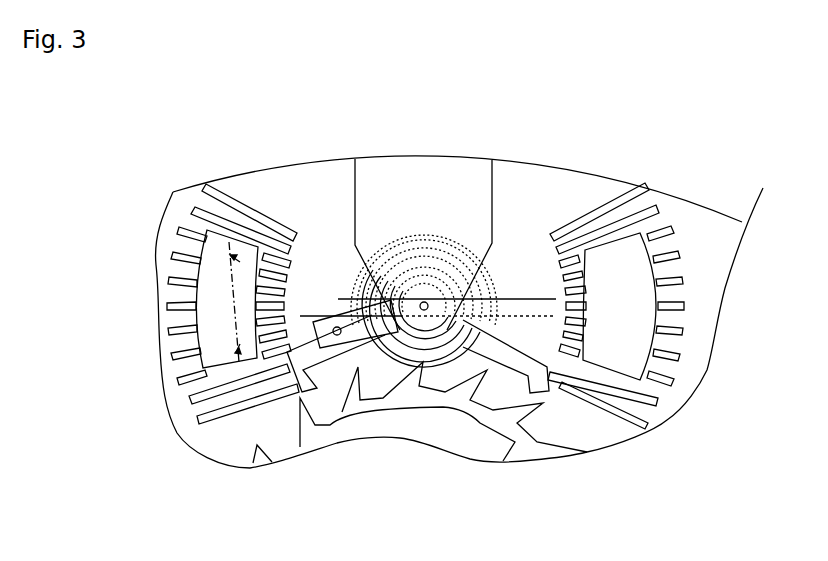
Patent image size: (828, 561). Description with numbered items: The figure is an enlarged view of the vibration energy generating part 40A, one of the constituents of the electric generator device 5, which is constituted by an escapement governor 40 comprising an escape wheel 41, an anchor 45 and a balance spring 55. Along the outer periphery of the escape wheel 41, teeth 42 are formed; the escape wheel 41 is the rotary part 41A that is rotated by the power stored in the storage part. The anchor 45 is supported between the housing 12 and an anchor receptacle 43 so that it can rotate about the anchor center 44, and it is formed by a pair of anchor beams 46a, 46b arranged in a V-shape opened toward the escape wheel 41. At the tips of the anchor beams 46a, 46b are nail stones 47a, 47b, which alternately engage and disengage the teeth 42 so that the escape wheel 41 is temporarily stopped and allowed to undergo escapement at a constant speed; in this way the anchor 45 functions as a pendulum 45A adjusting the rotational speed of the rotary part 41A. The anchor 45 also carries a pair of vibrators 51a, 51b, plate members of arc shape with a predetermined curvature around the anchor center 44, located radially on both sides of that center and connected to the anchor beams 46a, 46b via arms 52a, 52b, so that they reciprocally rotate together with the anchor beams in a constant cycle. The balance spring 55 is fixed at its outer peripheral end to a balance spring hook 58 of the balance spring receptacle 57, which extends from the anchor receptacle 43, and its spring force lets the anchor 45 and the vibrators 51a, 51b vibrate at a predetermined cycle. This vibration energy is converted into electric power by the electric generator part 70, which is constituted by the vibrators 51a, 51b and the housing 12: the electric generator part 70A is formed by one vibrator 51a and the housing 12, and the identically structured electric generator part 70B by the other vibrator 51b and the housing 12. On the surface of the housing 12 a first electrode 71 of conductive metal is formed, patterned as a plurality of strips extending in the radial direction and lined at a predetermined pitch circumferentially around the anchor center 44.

The escapement governor 40 is at (449, 268).
The vibration energy generating part 40A is at (266, 158).
The housing 12 is at (715, 225).
The escape wheel 41 is at (415, 490).
The rotary part 41A is at (294, 445).
The teeth 42 is at (332, 440).
The anchor receptacle 43 is at (467, 175).
The anchor center 44 is at (424, 301).
The anchor 45 is at (478, 202).
The pendulum 45A is at (515, 317).
The anchor beam 46a is at (285, 358).
The anchor beam 46b is at (562, 316).
The nail stone 47a is at (190, 401).
The nail stone 47b is at (657, 403).
The electric generator device 5 is at (170, 285).
The vibrator 51a is at (210, 296).
The vibrator 51b is at (640, 316).
The arm 52a is at (326, 300).
The arm 52b is at (556, 308).
The balance spring 55 is at (333, 312).
The balance spring receptacle 57 is at (235, 266).
The balance spring hook 58 is at (333, 331).
The electric generator part 70 is at (420, 264).
The electric generator part 70A is at (186, 246).
The electric generator part 70B is at (663, 252).
The first electrode 71 is at (193, 190).